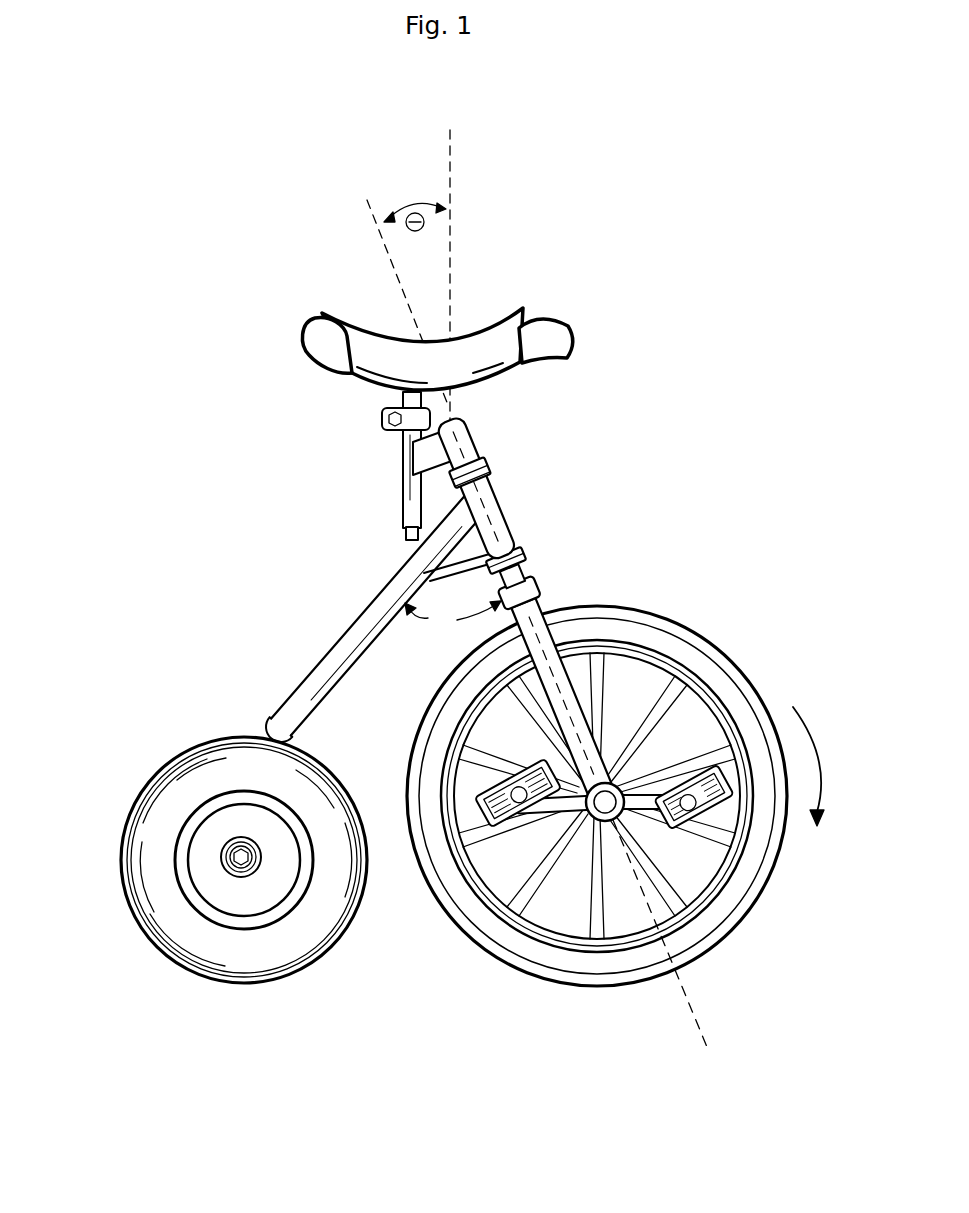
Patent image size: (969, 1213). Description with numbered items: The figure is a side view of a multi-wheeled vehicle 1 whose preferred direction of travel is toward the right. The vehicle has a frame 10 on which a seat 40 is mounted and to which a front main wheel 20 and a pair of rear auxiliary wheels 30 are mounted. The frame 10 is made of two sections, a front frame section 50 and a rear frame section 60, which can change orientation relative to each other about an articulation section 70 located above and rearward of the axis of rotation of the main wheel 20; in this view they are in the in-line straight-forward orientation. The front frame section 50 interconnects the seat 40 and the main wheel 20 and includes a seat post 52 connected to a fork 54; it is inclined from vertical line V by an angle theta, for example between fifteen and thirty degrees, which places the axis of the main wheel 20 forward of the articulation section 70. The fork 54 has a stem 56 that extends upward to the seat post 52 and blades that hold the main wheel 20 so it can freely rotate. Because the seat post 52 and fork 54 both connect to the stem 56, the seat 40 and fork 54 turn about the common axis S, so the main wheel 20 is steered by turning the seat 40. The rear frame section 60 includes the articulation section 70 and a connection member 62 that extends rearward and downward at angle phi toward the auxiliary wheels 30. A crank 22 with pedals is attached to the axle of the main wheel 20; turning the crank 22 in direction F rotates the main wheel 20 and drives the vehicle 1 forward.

The vehicle 1 is at (218, 355).
The frame 10 is at (347, 603).
The main wheel 20 is at (722, 642).
The crank 22 is at (590, 813).
The auxiliary wheels 30 is at (157, 768).
The seat 40 is at (535, 321).
The front frame section 50 is at (556, 582).
The seat post 52 is at (382, 424).
The fork 54 is at (545, 602).
The stem 56 is at (522, 566).
The rear frame section 60 is at (307, 658).
The connection member 62 is at (407, 560).
The articulation section 70 is at (500, 488).